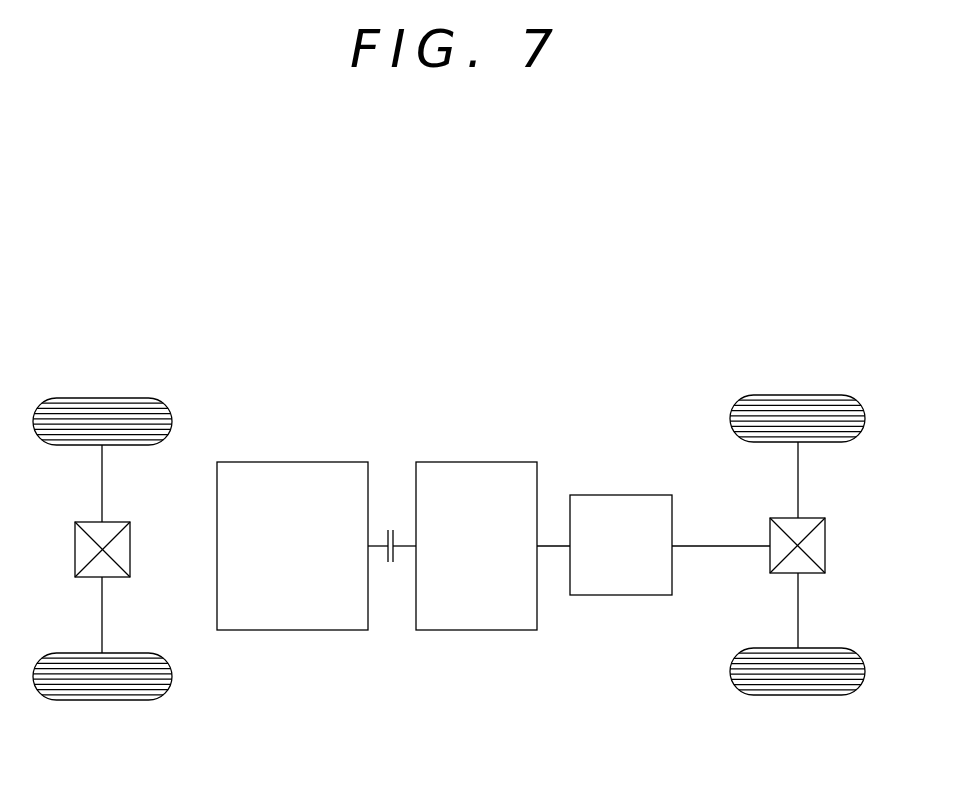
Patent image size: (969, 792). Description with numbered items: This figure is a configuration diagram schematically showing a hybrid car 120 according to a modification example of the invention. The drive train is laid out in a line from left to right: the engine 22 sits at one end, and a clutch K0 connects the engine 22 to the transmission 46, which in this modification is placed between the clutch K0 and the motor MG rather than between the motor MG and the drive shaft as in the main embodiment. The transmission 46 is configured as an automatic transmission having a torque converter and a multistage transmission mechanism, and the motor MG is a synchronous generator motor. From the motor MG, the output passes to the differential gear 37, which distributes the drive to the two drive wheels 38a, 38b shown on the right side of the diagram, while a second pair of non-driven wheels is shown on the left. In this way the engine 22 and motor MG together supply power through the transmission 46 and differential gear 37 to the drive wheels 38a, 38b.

The hybrid car 120 is at (527, 361).
The engine 22 is at (293, 462).
The clutch K0 is at (388, 567).
The transmission 46 is at (477, 462).
The motor MG is at (620, 495).
The differential gear 37 is at (770, 527).
The drive wheel 38a is at (800, 393).
The drive wheel 38b is at (797, 695).